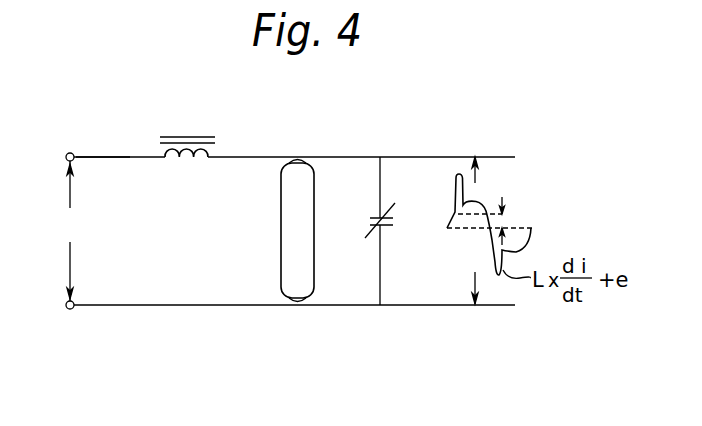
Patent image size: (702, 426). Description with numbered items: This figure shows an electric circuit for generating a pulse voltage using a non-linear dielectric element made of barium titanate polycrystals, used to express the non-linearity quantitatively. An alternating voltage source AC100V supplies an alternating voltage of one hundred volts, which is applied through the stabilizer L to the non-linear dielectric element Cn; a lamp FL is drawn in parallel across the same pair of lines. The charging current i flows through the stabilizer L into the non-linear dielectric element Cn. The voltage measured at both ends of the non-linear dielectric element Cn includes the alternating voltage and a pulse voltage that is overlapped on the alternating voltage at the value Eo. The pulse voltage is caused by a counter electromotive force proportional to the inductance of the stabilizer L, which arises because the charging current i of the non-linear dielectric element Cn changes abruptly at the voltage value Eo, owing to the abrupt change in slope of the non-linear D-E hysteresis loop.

The alternating voltage source AC100V is at (78, 231).
The charging current i is at (103, 146).
The stabilizer L is at (187, 167).
The fluorescent lamp FL is at (297, 231).
The non-linear dielectric element Cn is at (394, 223).
The voltage value Eo is at (489, 222).